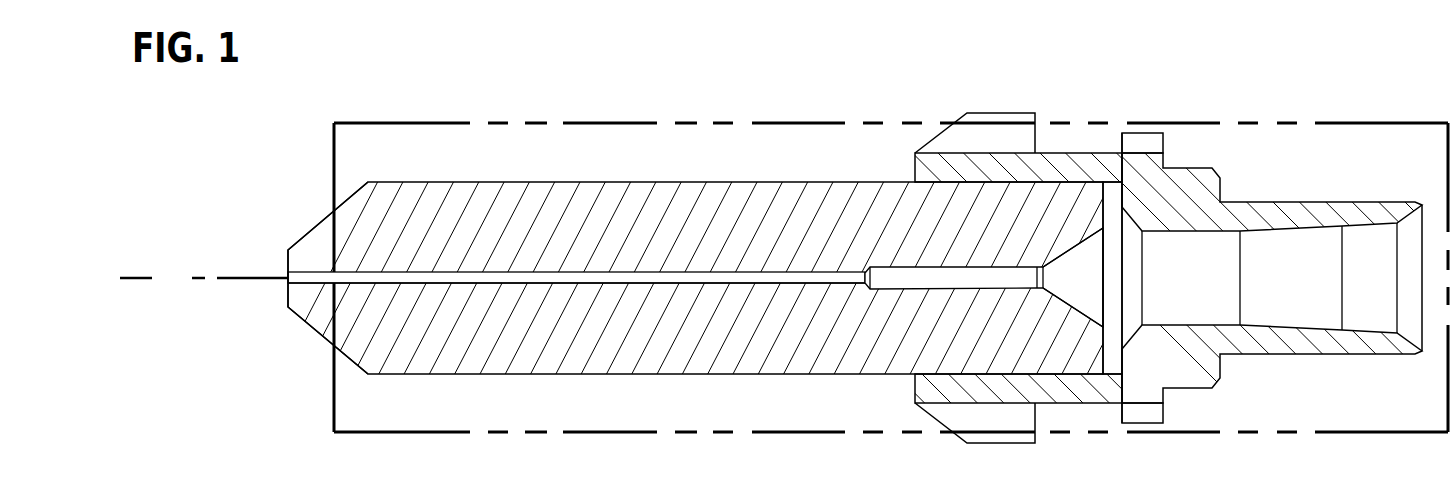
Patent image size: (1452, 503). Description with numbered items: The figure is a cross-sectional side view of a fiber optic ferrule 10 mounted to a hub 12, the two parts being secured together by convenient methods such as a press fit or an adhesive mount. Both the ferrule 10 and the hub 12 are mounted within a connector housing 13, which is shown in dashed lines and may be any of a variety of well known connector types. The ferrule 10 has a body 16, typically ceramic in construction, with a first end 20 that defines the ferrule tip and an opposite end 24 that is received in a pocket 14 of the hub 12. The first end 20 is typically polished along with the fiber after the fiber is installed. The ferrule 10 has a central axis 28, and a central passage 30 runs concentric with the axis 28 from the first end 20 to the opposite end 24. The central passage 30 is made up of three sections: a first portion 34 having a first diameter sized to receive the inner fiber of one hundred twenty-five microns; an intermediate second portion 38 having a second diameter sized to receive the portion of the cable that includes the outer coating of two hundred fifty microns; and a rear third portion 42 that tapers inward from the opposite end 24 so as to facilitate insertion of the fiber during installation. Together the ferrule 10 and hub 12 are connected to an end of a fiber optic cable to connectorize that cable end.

The fiber optic ferrule 10 is at (436, 182).
The hub 12 is at (1203, 168).
The connector housing 13 is at (355, 432).
The pocket 14 is at (1122, 202).
The body 16 is at (602, 193).
The first end 20 is at (288, 295).
The opposite end 24 is at (1105, 355).
The central axis 28 is at (168, 277).
The central passage 30 is at (740, 273).
The first portion 34 is at (578, 283).
The second portion 38 is at (933, 290).
The third portion 42 is at (1080, 242).